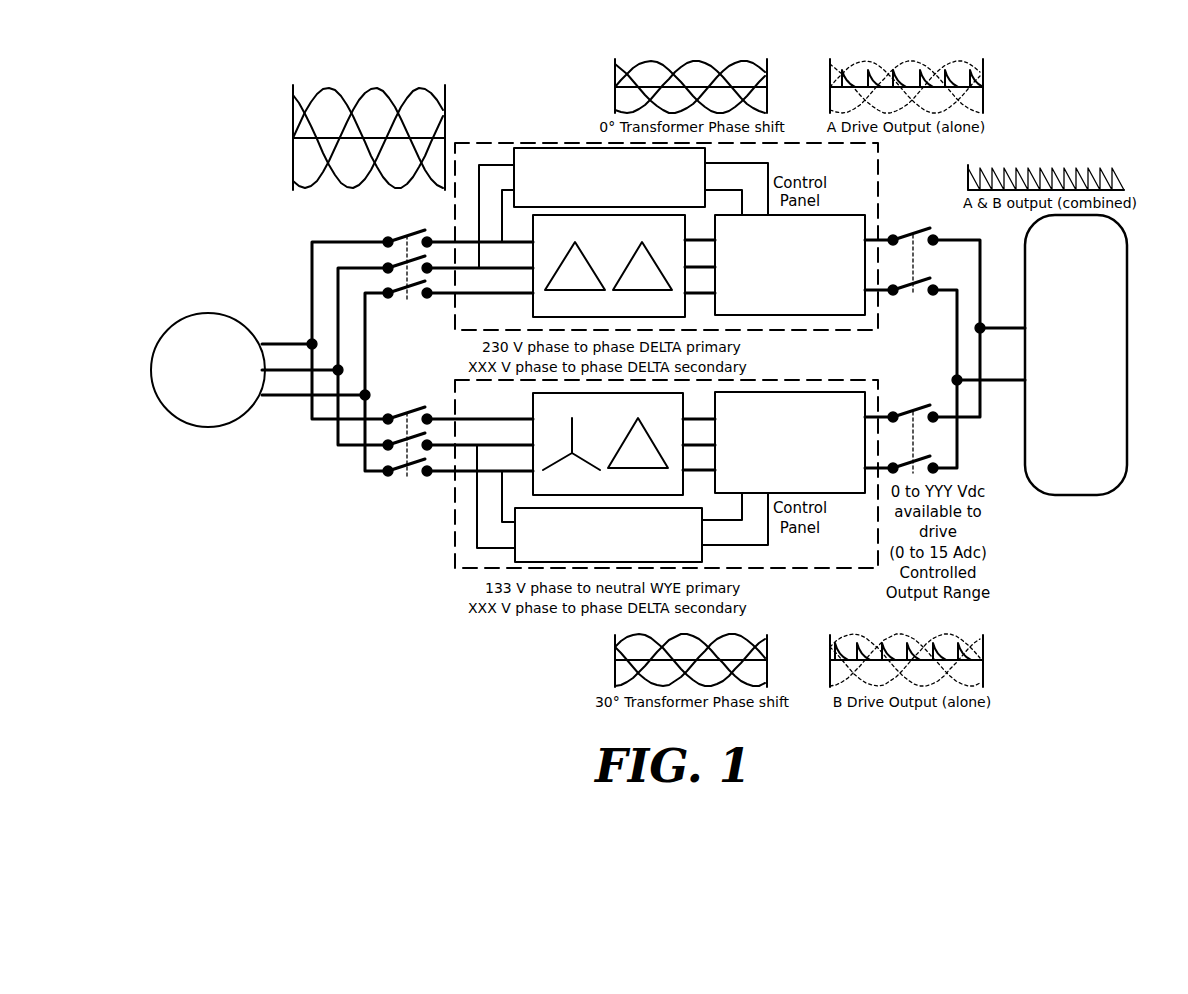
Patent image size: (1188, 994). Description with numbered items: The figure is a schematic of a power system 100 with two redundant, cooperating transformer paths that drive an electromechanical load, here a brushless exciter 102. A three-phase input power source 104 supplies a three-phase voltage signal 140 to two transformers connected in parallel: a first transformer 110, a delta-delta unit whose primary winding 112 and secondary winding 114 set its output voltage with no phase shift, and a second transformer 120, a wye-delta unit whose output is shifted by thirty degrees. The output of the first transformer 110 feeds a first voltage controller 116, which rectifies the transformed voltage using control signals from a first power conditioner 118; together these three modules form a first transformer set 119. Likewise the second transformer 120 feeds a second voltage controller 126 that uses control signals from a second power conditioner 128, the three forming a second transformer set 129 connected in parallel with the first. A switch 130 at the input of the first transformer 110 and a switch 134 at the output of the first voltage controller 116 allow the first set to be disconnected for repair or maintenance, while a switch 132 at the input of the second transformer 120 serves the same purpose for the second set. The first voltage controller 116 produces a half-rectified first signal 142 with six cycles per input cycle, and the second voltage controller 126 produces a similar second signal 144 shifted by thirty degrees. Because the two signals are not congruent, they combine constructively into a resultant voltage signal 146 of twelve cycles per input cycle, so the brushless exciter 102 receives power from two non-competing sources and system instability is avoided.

The power system 100 is at (324, 623).
The brushless exciter 102 is at (1078, 495).
The input power source 104 is at (212, 428).
The first transformer 110 is at (579, 271).
The primary winding 112 is at (568, 290).
The secondary winding 114 is at (634, 290).
The first voltage controller 116 is at (848, 315).
The first power conditioner 118 is at (536, 148).
The first transformer set 119 is at (878, 143).
The second transformer 120 is at (533, 408).
The second voltage controller 126 is at (845, 493).
The second power conditioner 128 is at (702, 550).
The second transformer set 129 is at (895, 367).
The switch 130 is at (405, 237).
The switch 132 is at (410, 474).
The switch 134 is at (905, 230).
The 3-phase voltage signal 140 is at (445, 100).
The first signal 142 is at (983, 80).
The second signal 144 is at (983, 655).
The resultant voltage signal 146 is at (1122, 170).